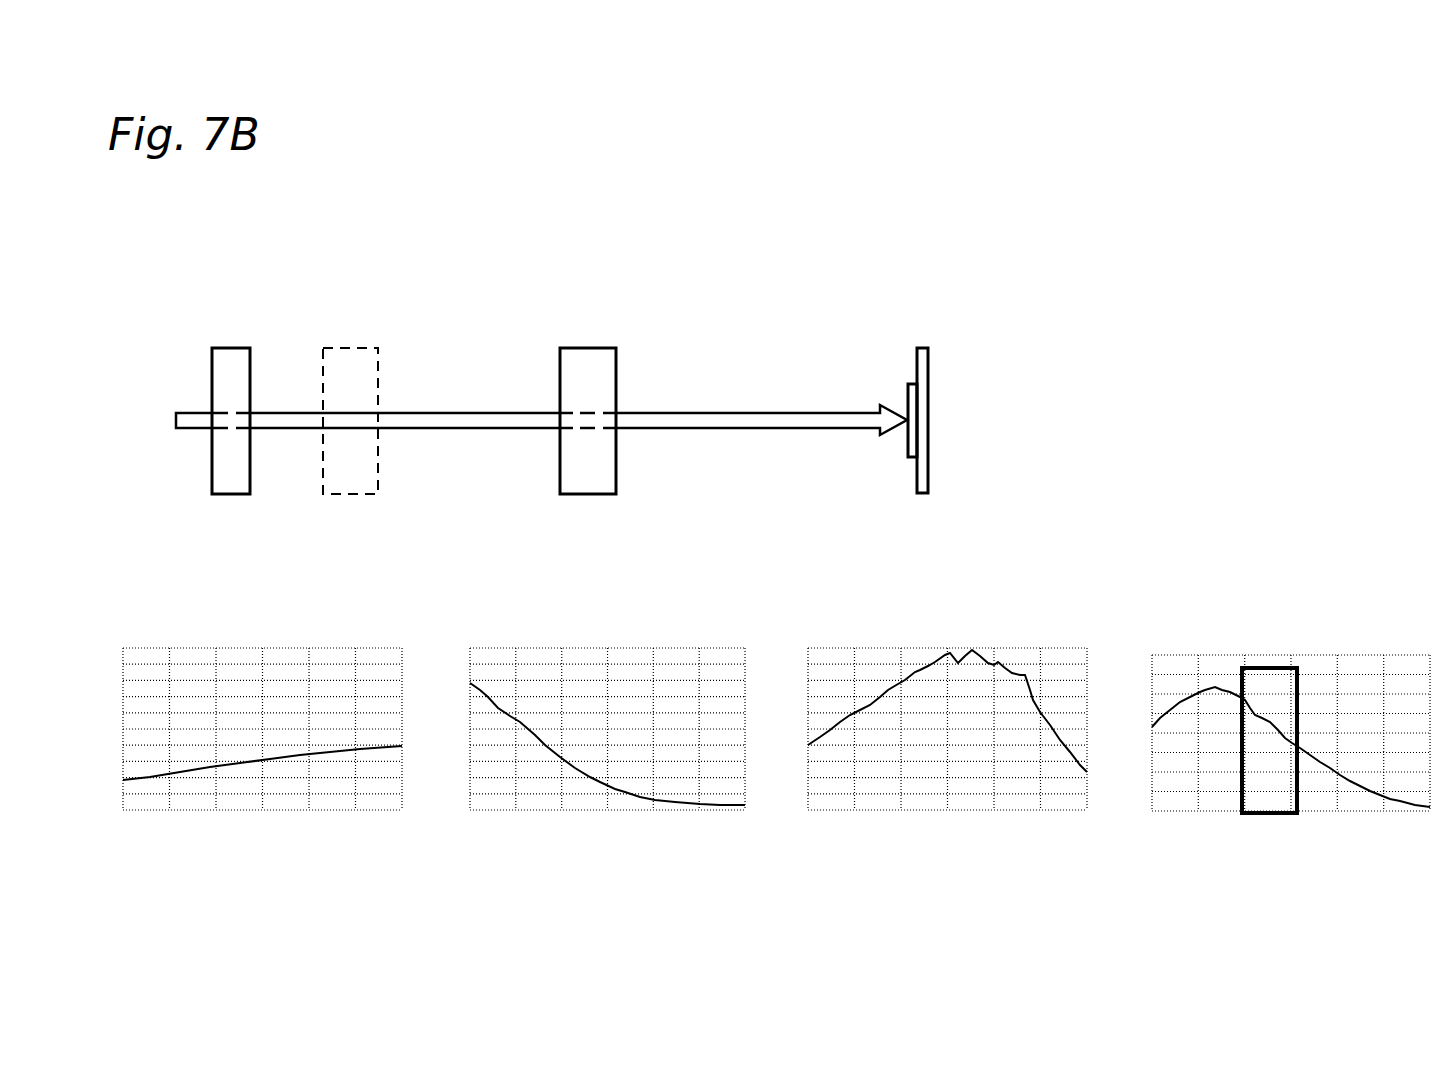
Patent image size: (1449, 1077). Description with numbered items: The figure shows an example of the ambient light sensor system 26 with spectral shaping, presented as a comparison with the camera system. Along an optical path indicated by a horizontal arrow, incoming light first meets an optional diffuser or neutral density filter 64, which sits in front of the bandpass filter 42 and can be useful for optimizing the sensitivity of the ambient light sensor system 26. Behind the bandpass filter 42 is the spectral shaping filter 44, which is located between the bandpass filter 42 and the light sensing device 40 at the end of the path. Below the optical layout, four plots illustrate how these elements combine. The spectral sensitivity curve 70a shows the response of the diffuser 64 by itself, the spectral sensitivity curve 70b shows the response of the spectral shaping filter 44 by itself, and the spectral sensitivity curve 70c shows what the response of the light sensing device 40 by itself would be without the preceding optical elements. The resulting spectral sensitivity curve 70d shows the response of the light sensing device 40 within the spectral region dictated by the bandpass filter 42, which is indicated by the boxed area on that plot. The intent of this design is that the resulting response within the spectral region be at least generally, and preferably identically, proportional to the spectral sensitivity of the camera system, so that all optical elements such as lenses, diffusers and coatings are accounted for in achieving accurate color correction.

The ambient light sensor system 26 is at (708, 258).
The diffuser or neutral density filter 64 is at (231, 347).
The bandpass filter 42 is at (351, 347).
The spectral shaping filter 44 is at (588, 347).
The light sensing device 40 is at (924, 347).
The spectral sensitivity curve 70a is at (240, 762).
The spectral sensitivity curve 70b is at (498, 708).
The spectral sensitivity curve 70c is at (888, 690).
The resulting spectral sensitivity curve 70d is at (1182, 697).